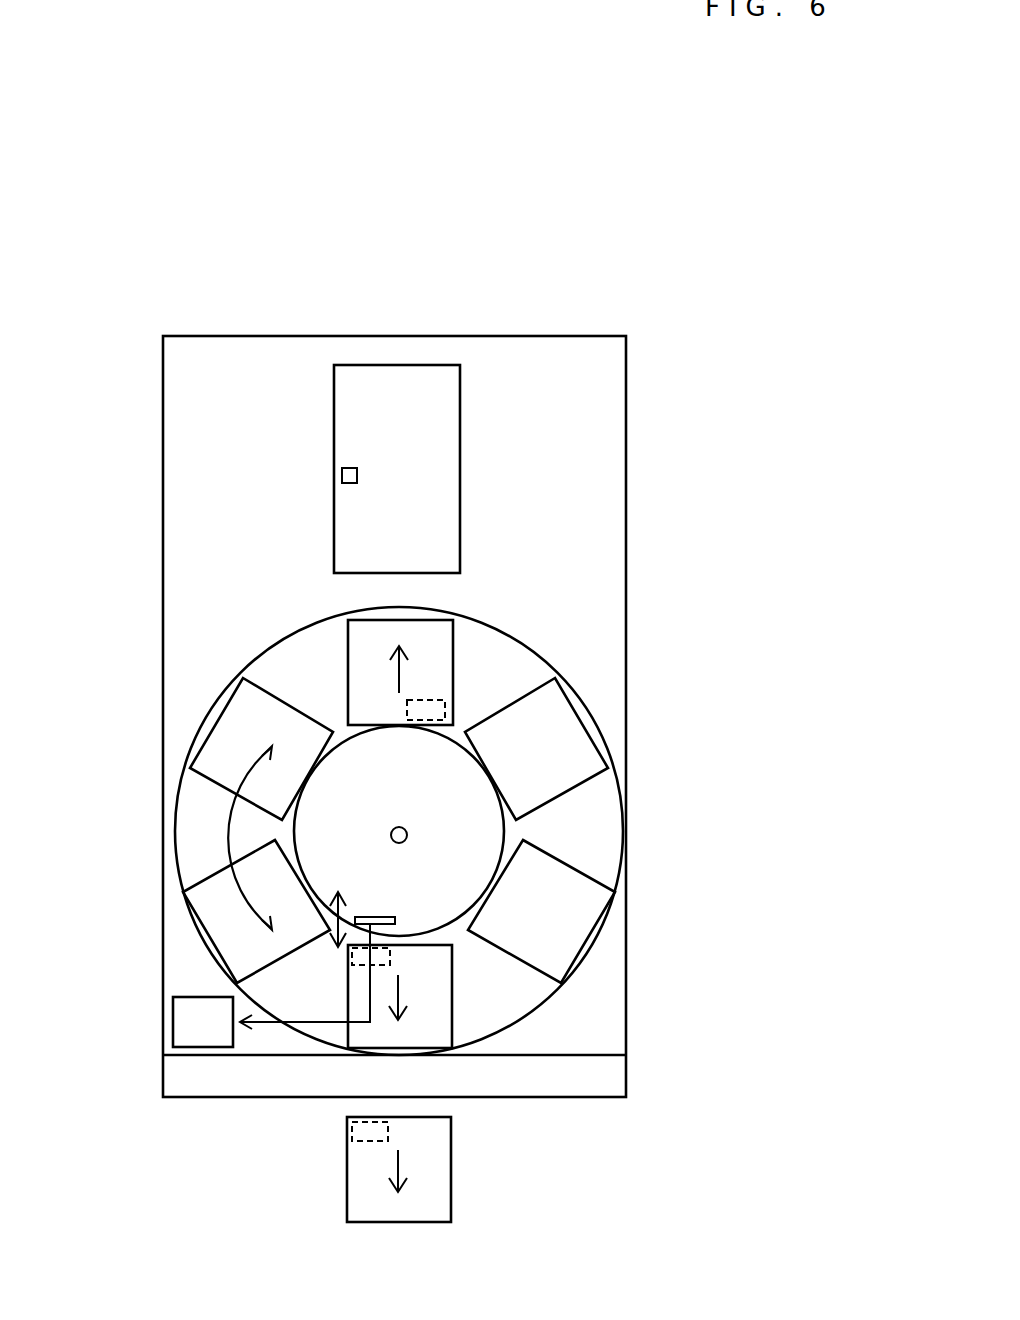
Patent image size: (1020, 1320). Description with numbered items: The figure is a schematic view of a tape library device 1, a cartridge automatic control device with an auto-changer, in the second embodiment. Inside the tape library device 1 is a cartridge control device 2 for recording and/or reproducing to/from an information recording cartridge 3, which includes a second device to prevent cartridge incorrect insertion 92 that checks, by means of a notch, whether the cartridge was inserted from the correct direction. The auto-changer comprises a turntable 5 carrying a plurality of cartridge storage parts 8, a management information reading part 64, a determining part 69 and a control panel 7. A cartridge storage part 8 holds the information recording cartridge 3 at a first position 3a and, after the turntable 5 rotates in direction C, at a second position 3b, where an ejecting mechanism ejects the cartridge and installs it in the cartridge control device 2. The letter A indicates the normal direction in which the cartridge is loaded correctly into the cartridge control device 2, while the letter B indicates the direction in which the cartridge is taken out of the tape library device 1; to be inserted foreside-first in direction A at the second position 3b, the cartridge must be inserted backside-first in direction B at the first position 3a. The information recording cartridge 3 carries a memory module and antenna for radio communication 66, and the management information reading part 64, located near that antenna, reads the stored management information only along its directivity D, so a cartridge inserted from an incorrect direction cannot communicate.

The tape library device 1 is at (626, 400).
The cartridge control device 2 is at (433, 448).
The second device to prevent cartridge incorrect insertion 92 is at (337, 465).
The information recording cartridge 3 is at (451, 1197).
The first position 3a is at (425, 1013).
The second position 3b is at (367, 668).
The turntable 5 is at (600, 855).
The control panel 7 is at (590, 1085).
The cartridge storage part 8 is at (553, 720).
The management information reading part 64 is at (397, 912).
The memory module and antenna for radio communication 66 is at (350, 1135).
The determining part 69 is at (172, 1025).
The normal direction A is at (405, 688).
The take-out direction B is at (400, 1157).
The direction of rotating the turntable C is at (228, 822).
The directivity of radio communication D is at (343, 930).